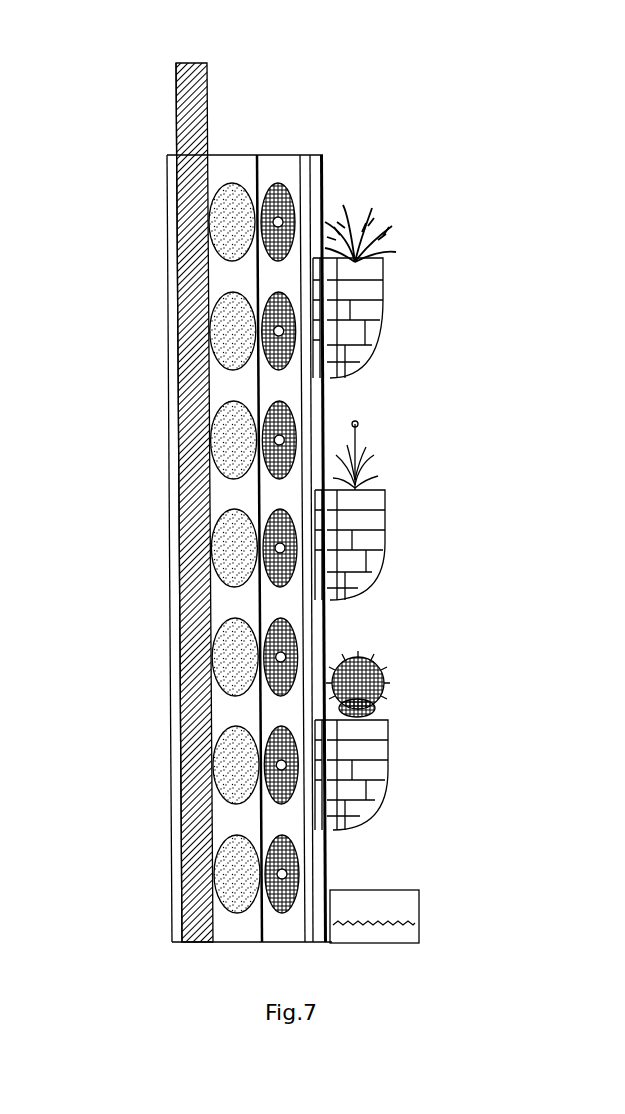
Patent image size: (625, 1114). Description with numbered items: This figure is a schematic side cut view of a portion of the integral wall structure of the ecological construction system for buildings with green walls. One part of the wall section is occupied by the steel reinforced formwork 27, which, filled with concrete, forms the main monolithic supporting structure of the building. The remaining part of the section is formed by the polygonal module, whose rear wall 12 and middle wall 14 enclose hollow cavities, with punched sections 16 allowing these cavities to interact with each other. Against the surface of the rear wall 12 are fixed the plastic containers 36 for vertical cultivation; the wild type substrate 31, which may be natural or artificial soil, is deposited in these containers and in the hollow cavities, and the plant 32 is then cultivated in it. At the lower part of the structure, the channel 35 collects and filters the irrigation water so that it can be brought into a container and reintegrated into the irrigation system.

The rear wall 12 is at (241, 513).
The middle wall 14 is at (316, 506).
The punched sections 16 is at (131, 502).
The steel reinforced formwork 27 is at (183, 471).
The substrate 31 is at (292, 548).
The plant 32 is at (293, 516).
The channel 35 is at (433, 909).
The plastic containers for vertical cultivation 36 is at (424, 520).